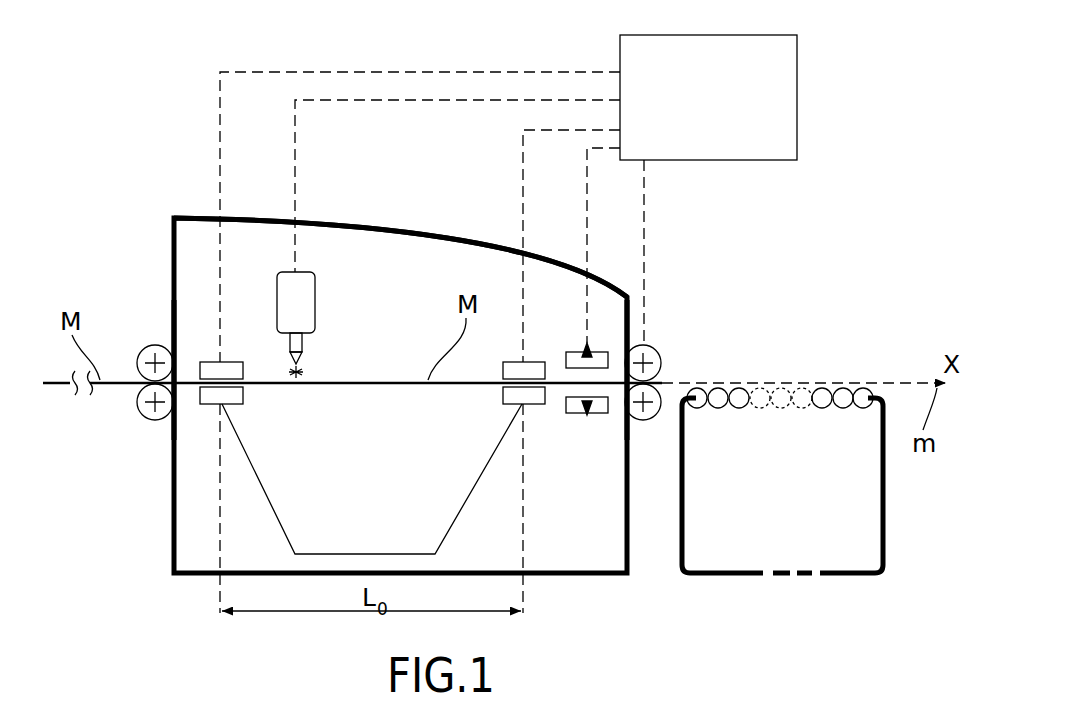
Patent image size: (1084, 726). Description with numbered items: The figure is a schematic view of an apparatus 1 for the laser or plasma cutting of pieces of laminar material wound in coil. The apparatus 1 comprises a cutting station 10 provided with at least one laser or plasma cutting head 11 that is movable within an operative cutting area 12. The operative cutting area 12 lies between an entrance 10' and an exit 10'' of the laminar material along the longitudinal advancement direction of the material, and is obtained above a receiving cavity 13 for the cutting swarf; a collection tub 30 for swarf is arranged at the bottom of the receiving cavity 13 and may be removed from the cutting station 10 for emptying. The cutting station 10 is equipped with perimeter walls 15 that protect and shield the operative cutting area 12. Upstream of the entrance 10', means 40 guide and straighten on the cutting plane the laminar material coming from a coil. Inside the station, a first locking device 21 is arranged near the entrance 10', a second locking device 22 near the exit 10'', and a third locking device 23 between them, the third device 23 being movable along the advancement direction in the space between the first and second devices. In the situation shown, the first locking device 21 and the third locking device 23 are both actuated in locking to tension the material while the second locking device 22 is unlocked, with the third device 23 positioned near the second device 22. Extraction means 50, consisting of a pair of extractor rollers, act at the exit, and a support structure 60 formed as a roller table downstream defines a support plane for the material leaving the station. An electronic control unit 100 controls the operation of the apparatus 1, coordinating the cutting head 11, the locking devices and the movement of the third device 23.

The apparatus 1 is at (838, 258).
The cutting station 10 is at (356, 333).
The entrance 10' is at (149, 330).
The exit 10'' is at (681, 340).
The laser or plasma cutting head 11 is at (297, 290).
The operative cutting area 12 is at (393, 357).
The receiving cavity 13 is at (342, 472).
The perimeter walls 15 is at (408, 228).
The first locking device 21 is at (207, 408).
The second locking device 22 is at (598, 417).
The third locking device 23 is at (537, 408).
The collection tub 30 is at (365, 554).
The means for guiding and straightening 40 is at (128, 403).
The extraction means 50 is at (672, 366).
The support structure 60 is at (833, 587).
The electronic control unit 100 is at (708, 97).